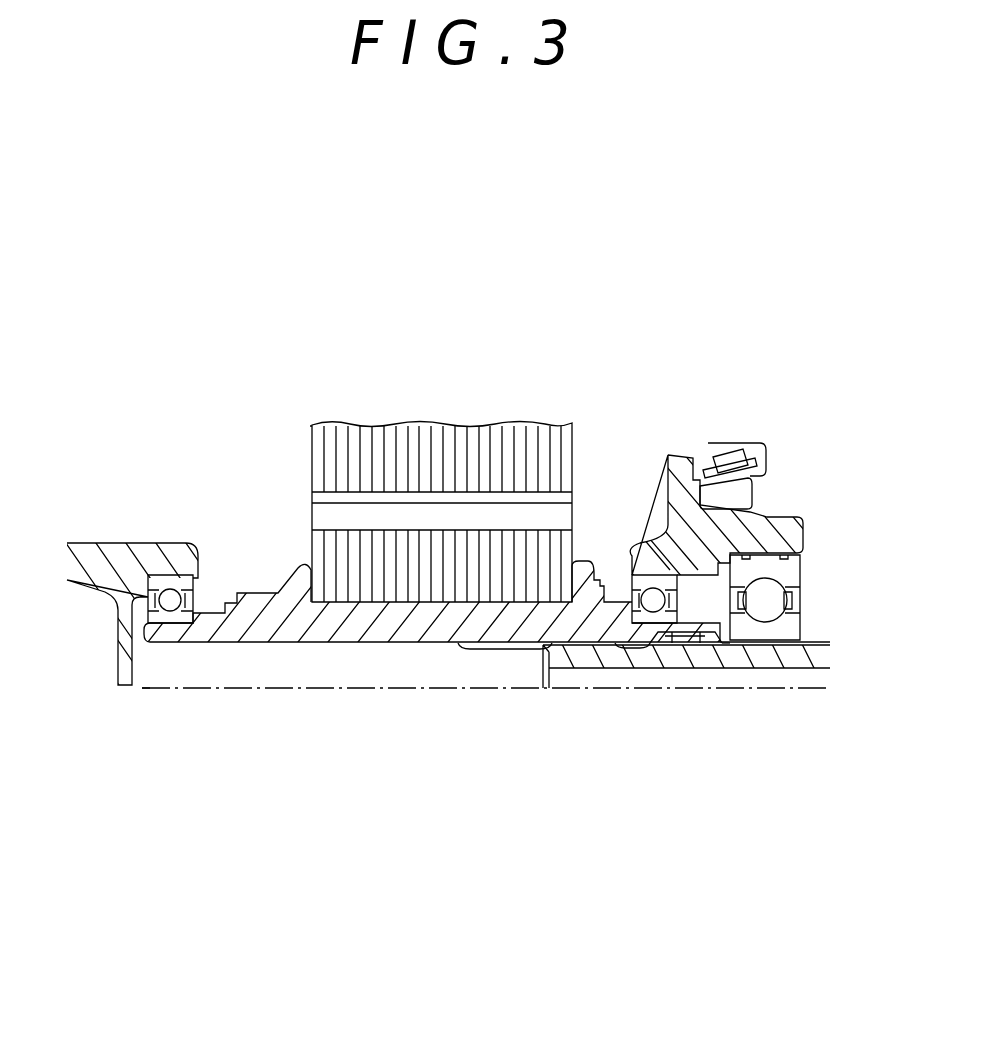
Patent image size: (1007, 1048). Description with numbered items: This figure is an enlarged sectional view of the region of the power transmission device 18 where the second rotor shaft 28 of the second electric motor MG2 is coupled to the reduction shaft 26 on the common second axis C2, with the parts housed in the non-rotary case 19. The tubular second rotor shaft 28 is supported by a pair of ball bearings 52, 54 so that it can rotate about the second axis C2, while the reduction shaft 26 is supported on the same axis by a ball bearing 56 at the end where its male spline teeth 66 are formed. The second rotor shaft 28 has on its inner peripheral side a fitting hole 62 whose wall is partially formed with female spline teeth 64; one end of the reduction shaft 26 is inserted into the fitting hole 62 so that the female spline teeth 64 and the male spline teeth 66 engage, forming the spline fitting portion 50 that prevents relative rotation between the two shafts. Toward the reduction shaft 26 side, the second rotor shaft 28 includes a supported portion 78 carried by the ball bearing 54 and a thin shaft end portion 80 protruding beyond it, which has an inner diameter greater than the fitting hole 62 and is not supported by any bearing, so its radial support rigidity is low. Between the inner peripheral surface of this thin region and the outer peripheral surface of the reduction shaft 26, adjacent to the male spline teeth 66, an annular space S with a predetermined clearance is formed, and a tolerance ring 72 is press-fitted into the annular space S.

The power transmission device 18 is at (243, 316).
The case 19 is at (95, 560).
The ball bearing 52 is at (170, 598).
The second rotor shaft 28 is at (262, 588).
The second electric motor MG2 is at (331, 410).
The shaft end portion 80 is at (697, 628).
The ball bearing 54 is at (637, 600).
The ball bearing 56 is at (757, 490).
The fitting hole 62 is at (497, 651).
The female spline teeth 64 is at (522, 650).
The spline fitting portion 50 is at (585, 660).
The reduction shaft 26 is at (808, 657).
The male spline teeth 66 is at (628, 643).
The supported portion 78 is at (652, 628).
The tolerance ring 72 is at (690, 652).
The annular space S is at (733, 644).
The second axis C2 is at (170, 688).